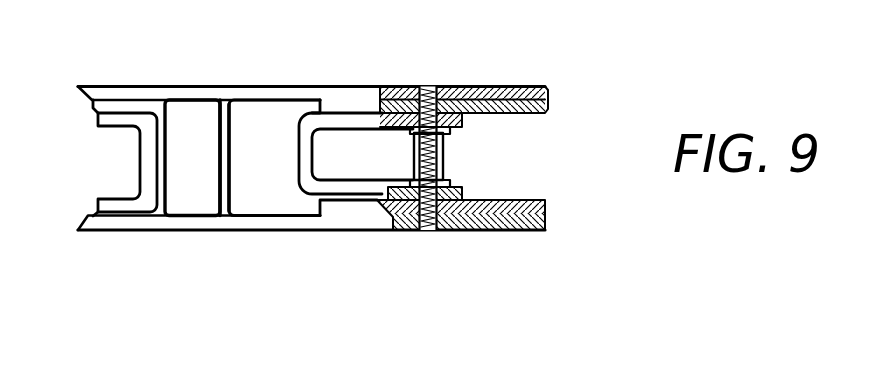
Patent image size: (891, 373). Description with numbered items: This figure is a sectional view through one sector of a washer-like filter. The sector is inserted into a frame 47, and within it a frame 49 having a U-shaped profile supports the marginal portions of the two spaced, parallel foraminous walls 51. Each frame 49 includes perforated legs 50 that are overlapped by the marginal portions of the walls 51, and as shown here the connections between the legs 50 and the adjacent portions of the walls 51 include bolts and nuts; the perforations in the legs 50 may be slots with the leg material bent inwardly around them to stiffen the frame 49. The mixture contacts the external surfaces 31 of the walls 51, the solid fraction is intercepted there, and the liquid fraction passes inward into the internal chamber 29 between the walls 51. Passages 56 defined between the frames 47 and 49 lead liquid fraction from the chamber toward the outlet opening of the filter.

The internal chamber 29 is at (480, 167).
The external surface 31 is at (521, 83).
The frame 47 is at (227, 123).
The frame having a U-shaped profile 49 is at (302, 153).
The perforated legs 50 is at (490, 139).
The foraminous wall 51 is at (477, 88).
The passage 56 is at (185, 125).